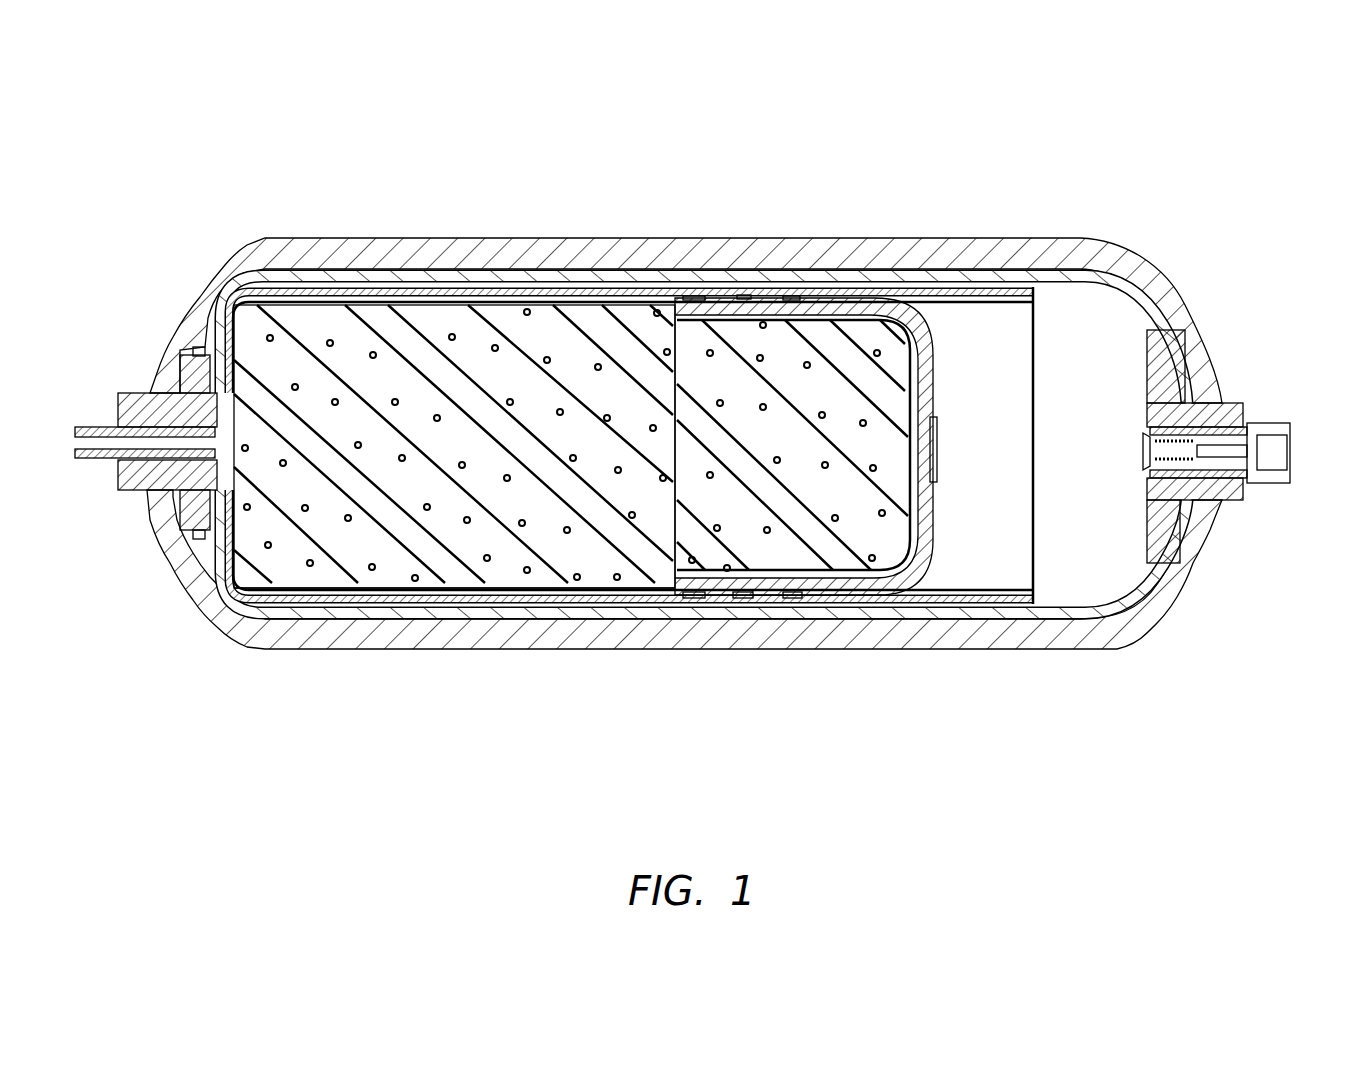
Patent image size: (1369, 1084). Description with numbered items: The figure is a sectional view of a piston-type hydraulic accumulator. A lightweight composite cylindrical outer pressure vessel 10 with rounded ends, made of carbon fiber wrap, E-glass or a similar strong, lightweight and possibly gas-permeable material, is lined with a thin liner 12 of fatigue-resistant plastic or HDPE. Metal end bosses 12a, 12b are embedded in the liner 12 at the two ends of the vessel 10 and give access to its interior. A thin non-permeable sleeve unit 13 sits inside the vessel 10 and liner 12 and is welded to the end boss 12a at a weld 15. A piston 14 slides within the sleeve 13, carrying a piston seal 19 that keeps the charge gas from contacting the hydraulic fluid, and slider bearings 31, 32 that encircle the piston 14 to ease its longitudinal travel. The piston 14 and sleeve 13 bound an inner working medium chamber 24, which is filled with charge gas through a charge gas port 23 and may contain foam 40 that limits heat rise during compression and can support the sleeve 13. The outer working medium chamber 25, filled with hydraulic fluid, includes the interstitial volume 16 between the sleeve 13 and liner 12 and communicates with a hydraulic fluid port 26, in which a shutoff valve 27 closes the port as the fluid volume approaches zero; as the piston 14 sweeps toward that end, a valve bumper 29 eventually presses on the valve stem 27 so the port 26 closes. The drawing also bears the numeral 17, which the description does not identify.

The outer pressure vessel 10 is at (252, 250).
The liner 12 is at (172, 322).
The metal end boss 12a is at (145, 392).
The metal end boss 12b is at (1232, 500).
The non-permeable sleeve unit 13 is at (958, 287).
The piston 14 is at (850, 310).
The weld 15 is at (113, 490).
The interstitial volume 16 is at (425, 280).
The foam in inner container 17 is at (700, 348).
The piston seal 19 is at (745, 300).
The charge gas port 23 is at (85, 437).
The inner working medium chamber 24 is at (291, 318).
The outer working medium chamber 25 is at (1073, 317).
The hydraulic fluid port 26 is at (1272, 447).
The shutoff valve 27 is at (1197, 405).
The valve bumper 29 is at (972, 330).
The slider bearing 31 is at (690, 297).
The slider bearing 32 is at (800, 298).
The foam 40 is at (455, 583).